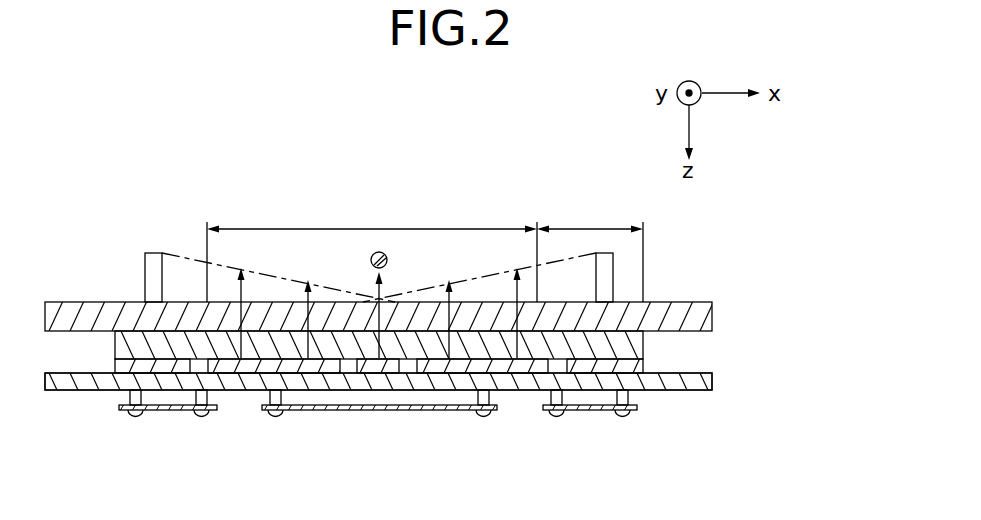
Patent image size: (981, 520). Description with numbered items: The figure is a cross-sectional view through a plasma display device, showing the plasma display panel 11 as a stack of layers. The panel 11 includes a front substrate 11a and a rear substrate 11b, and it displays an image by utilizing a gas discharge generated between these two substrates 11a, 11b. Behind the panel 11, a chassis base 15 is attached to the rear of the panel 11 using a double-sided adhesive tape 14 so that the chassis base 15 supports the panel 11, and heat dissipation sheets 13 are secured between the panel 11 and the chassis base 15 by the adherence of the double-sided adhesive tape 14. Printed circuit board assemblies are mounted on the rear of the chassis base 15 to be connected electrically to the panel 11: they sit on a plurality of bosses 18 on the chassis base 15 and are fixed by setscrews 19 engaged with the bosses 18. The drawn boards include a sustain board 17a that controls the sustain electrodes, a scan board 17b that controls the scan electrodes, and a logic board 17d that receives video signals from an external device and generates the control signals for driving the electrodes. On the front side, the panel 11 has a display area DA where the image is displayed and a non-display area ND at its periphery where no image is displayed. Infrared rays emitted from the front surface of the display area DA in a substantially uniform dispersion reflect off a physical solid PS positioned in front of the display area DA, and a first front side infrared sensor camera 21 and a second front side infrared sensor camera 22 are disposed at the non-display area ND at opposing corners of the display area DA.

The plasma display panel 11 is at (454, 349).
The front substrate 11a is at (705, 317).
The rear substrate 11b is at (633, 347).
The heat dissipation sheet 13 is at (237, 365).
The double-sided adhesive tape 14 is at (130, 365).
The chassis base 15 is at (677, 383).
The sustain board 17a is at (595, 410).
The scan board 17b is at (165, 410).
The logic board 17d is at (393, 410).
The boss 18 is at (272, 395).
The setscrew 19 is at (276, 413).
The first front side infrared sensor camera 21 is at (610, 272).
The second front side infrared sensor camera 22 is at (150, 269).
The physical solid PS is at (381, 252).
The display area DA is at (372, 249).
The non-display area ND is at (590, 250).